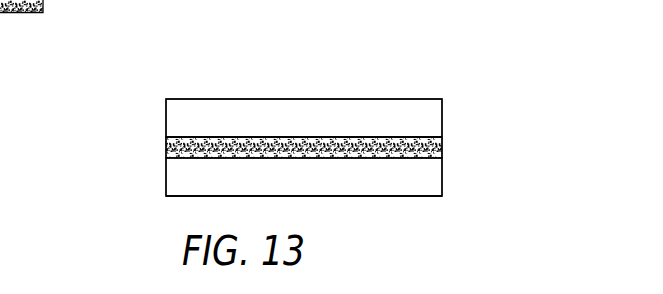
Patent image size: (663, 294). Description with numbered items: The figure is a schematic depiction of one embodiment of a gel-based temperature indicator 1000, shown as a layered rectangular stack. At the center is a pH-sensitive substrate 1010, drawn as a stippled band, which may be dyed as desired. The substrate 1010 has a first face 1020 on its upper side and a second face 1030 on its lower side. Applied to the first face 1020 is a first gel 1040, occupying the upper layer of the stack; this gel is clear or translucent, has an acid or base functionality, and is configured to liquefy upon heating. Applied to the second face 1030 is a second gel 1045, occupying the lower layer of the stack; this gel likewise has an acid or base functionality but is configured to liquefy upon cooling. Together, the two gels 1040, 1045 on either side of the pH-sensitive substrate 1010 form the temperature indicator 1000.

The gel-based temperature indicator 1000 is at (368, 64).
The pH-sensitive substrate 1010 is at (182, 148).
The first face 1020 is at (377, 138).
The second face 1030 is at (356, 196).
The first gel 1040 is at (178, 117).
The second gel 1045 is at (188, 179).